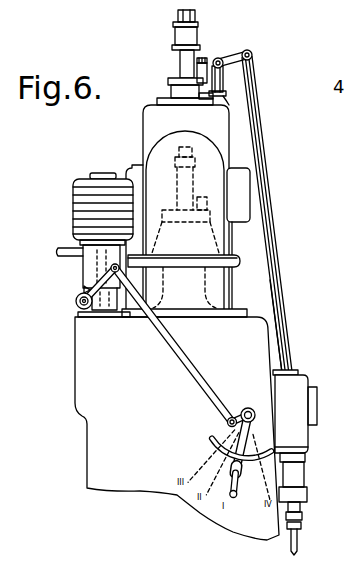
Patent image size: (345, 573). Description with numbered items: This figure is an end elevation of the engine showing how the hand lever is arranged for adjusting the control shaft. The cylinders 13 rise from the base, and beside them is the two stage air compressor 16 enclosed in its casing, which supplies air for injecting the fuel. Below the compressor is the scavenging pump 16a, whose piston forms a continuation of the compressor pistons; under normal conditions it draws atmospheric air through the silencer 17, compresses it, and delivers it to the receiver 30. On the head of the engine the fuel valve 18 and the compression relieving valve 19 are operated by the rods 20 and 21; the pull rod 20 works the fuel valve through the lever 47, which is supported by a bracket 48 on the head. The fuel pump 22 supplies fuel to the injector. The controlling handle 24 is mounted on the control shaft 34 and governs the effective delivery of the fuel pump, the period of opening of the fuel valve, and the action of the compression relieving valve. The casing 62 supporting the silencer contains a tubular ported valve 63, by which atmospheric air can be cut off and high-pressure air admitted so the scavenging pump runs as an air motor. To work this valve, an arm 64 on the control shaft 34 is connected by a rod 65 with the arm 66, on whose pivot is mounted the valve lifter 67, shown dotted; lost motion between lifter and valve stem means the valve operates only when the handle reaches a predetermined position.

The cylinders 13 is at (145, 133).
The two stage air compressor 16 is at (157, 152).
The scavenging pump 16a is at (190, 303).
The silencer 17 is at (73, 208).
The fuel valve 18 is at (180, 89).
The compression relieving valve 19 is at (212, 78).
The pull rod 20 is at (278, 259).
The rod 21 is at (285, 318).
The fuel pump 22 is at (300, 472).
The controlling handle 24 is at (241, 499).
The receiver 30 is at (244, 193).
The control shaft 34 is at (257, 398).
The lever 47 is at (237, 54).
The bracket 48 is at (250, 63).
The casing 62 is at (83, 258).
The tubular ported valve 63 is at (80, 288).
The arm 64 is at (228, 419).
The rod 65 is at (190, 370).
The arm 66 is at (76, 303).
The valve lifter 67 is at (88, 320).